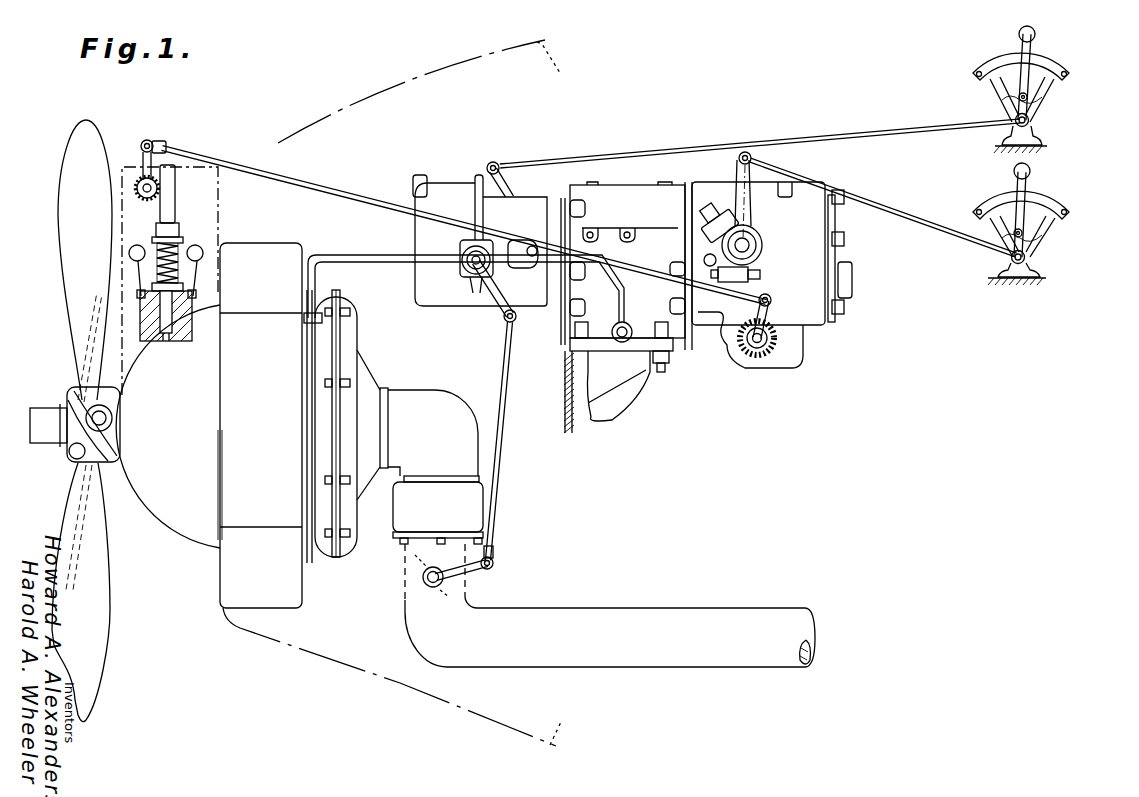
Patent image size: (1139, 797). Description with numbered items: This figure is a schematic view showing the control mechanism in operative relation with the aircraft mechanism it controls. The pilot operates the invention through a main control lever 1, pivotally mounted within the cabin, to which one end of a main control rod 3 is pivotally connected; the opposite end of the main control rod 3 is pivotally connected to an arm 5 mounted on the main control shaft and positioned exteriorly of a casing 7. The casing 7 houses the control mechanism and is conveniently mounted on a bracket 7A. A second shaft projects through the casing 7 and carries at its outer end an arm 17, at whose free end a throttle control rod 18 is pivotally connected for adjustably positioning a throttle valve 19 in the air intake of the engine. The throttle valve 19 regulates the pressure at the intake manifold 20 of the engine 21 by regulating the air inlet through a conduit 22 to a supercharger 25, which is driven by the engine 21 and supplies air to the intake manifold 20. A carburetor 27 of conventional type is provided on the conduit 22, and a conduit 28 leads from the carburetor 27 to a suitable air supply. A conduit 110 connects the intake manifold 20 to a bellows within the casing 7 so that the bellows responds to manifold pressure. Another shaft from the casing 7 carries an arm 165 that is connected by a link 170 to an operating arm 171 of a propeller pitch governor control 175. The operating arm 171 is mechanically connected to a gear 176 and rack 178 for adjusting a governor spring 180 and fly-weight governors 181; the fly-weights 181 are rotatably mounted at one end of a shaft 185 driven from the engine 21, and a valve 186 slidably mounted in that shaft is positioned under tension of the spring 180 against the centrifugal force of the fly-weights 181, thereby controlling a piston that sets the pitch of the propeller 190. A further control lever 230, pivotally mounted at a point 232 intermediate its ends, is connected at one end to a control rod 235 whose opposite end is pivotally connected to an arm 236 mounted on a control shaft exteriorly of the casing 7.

The main control lever 1 is at (1030, 42).
The main control rod 3 is at (897, 129).
The arm 5 is at (508, 182).
The casing 7 is at (641, 221).
The bracket 7A is at (642, 352).
The arm 17 is at (490, 296).
The throttle control rod 18 is at (498, 445).
The throttle valve 19 is at (444, 585).
The intake manifold 20 is at (320, 303).
The engine 21 is at (275, 431).
The conduit 22 is at (445, 402).
The supercharger 25 is at (372, 322).
The carburetor 27 is at (452, 517).
The conduit 28 is at (685, 622).
The conduit 110 is at (378, 257).
The arm 165 is at (771, 300).
The link 170 is at (314, 186).
The operating arm 171 is at (142, 148).
The propeller pitch governor control 175 is at (204, 168).
The gear 176 is at (137, 190).
The rack 178 is at (168, 208).
The governor spring 180 is at (175, 257).
The fly-weight governors 181 is at (203, 248).
The shaft 185 is at (140, 310).
The valve 186 is at (172, 325).
The propeller 190 is at (70, 282).
The control lever 230 is at (1025, 189).
The pivot point 232 is at (1007, 251).
The control rod 235 is at (906, 216).
The arm 236 is at (752, 211).